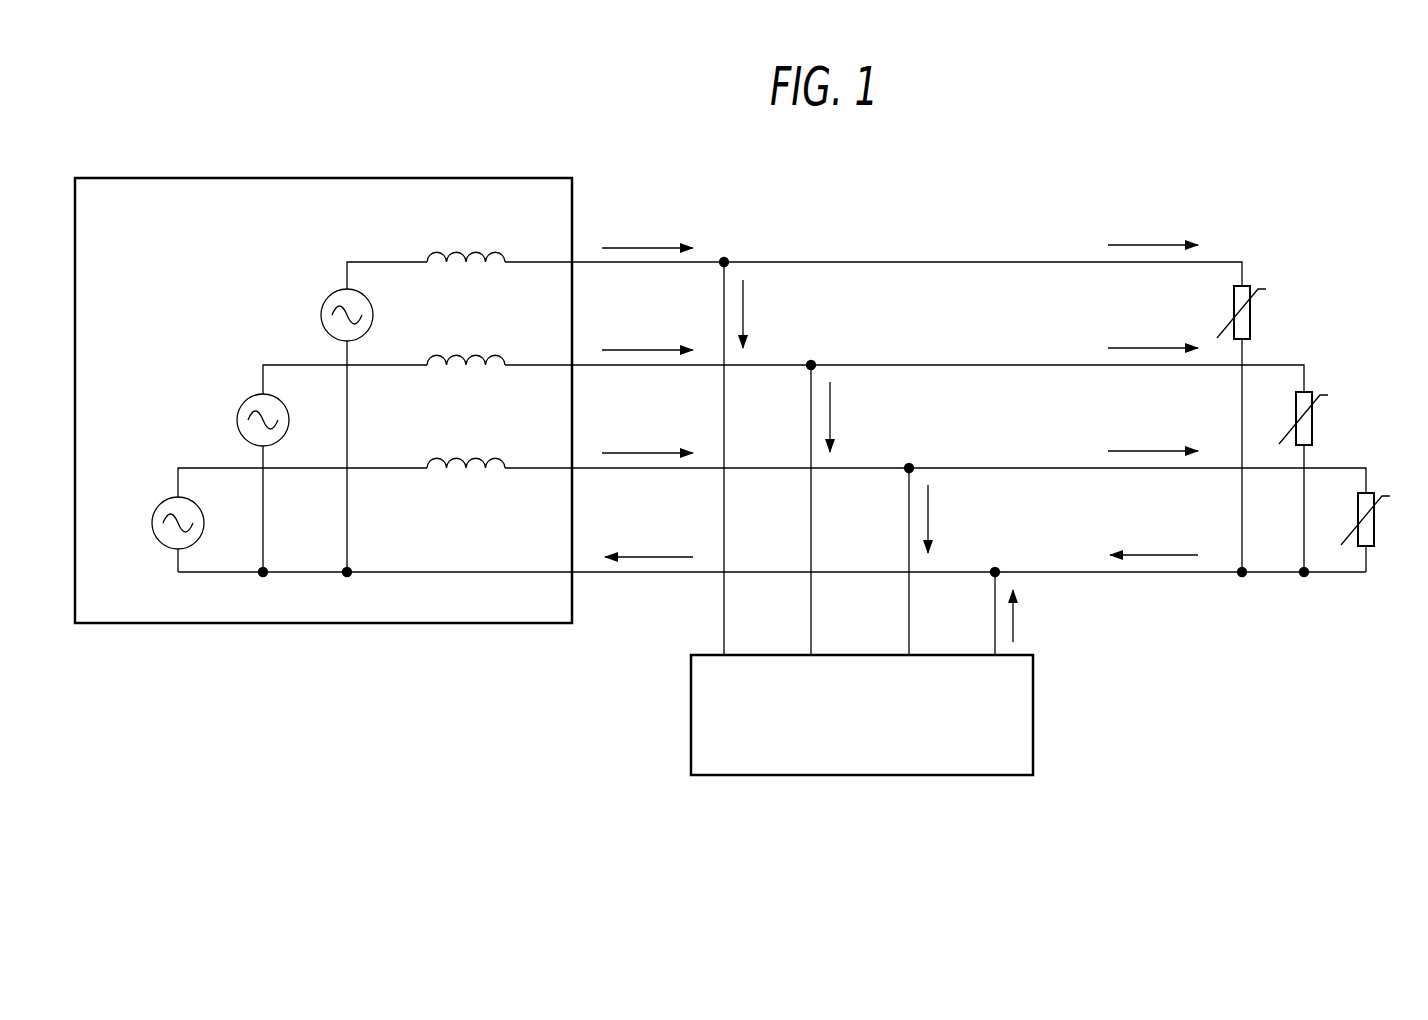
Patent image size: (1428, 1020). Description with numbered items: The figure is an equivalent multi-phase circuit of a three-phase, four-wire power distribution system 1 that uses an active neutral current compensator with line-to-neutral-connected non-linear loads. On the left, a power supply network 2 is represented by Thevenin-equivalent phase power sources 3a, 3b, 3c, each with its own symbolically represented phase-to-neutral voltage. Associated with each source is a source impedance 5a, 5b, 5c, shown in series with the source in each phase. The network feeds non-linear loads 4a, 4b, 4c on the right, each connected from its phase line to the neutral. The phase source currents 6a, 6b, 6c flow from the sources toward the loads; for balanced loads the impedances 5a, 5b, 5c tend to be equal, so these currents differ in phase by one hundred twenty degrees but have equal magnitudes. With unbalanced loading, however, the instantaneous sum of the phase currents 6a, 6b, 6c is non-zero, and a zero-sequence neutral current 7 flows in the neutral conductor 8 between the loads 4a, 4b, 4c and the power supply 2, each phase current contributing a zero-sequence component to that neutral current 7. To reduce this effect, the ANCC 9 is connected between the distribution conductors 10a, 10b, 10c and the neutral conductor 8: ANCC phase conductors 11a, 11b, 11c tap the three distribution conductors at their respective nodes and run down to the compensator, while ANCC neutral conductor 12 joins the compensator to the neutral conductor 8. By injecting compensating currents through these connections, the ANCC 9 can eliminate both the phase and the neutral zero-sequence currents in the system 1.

The three-phase, four-wire power distribution system 1 is at (146, 150).
The power supply network 2 is at (503, 625).
The phase power source 3a is at (372, 307).
The phase power source 3b is at (287, 436).
The phase power source 3c is at (202, 538).
The non-linear load 4a is at (1251, 325).
The non-linear load 4b is at (1313, 427).
The non-linear load 4c is at (1375, 532).
The source impedance 5a is at (497, 252).
The source impedance 5b is at (497, 355).
The source impedance 5c is at (497, 458).
The phase source current 6a is at (667, 247).
The phase source current 6b is at (667, 349).
The phase source current 6c is at (667, 452).
The zero-sequence neutral current 7 is at (630, 555).
The neutral conductor 8 is at (1147, 572).
The ANCC 9 is at (1033, 738).
The distribution conductor 10a is at (1033, 258).
The distribution conductor 10b is at (1033, 361).
The distribution conductor 10c is at (1033, 463).
The ANCC phase conductor 11a is at (723, 619).
The ANCC phase conductor 11b is at (810, 619).
The ANCC phase conductor 11c is at (909, 619).
The ANCC neutral conductor 12 is at (994, 619).